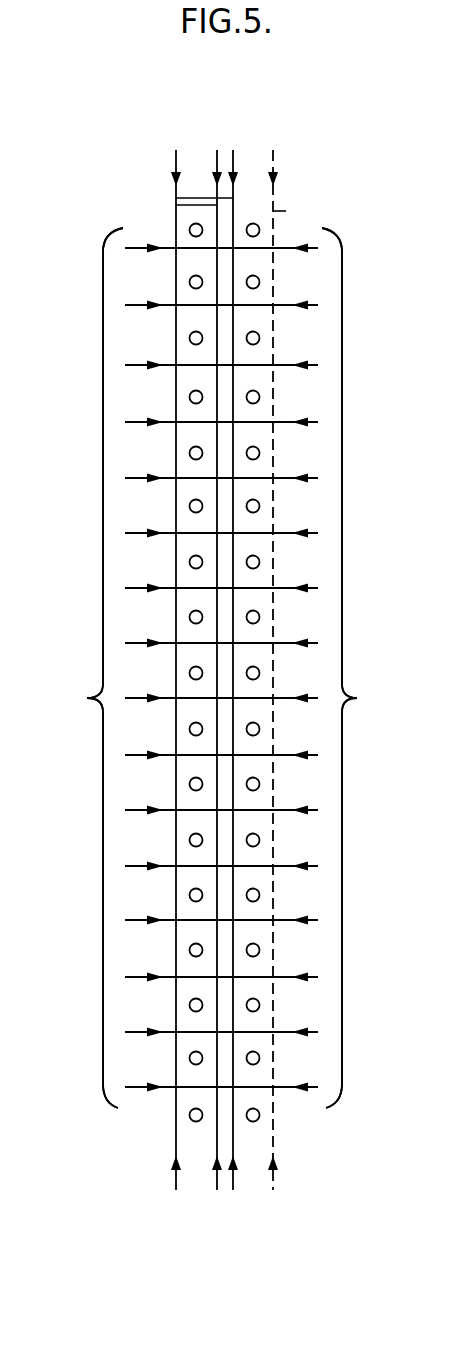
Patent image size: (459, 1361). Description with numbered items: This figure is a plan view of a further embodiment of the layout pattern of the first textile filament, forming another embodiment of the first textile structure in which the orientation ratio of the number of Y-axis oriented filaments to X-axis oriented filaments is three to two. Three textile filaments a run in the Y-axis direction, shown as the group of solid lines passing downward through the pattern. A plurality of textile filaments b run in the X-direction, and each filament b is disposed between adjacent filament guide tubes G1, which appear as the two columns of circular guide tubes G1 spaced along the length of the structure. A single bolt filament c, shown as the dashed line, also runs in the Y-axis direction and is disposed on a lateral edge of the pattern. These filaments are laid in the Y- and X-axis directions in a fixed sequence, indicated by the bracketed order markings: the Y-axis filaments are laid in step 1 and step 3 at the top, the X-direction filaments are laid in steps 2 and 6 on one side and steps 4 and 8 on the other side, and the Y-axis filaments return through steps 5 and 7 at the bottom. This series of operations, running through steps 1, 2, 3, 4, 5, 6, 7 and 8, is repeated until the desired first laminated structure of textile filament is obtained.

The laying step one 1 is at (243, 142).
The laying step three 3 is at (270, 637).
The laying step five 5 is at (243, 1203).
The laying step seven 7 is at (273, 1207).
The laying step two 2 is at (88, 668).
The laying step six 6 is at (88, 668).
The laying step four 4 is at (355, 668).
The laying step eight 8 is at (355, 668).
The filament guide tube G1 is at (260, 506).
The textile filament in Y-axis direction a is at (182, 206).
The textile filament in X-direction b is at (190, 421).
The bolt filament c is at (278, 212).